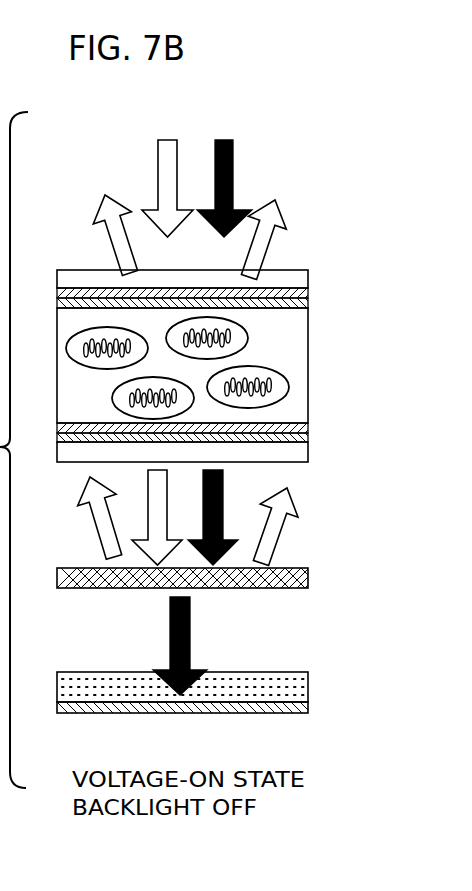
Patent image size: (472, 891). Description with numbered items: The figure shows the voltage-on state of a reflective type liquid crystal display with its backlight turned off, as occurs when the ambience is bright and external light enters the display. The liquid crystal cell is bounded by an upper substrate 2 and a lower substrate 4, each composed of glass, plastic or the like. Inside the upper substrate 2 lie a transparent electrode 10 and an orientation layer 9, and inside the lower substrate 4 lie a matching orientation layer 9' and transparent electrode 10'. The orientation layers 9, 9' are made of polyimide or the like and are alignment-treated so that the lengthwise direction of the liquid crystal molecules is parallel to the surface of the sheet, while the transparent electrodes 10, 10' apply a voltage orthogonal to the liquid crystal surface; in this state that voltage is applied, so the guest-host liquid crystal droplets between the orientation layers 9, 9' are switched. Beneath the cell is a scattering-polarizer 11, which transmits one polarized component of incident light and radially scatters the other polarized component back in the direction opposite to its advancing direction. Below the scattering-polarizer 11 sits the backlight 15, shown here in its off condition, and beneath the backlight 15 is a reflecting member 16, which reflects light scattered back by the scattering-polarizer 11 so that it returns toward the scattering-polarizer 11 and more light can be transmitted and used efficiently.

The substrate 2 is at (308, 275).
The transparent electrode 10 is at (217, 292).
The orientation layer 9 is at (200, 307).
The orientation layer 9' is at (203, 423).
The transparent electrode 10' is at (220, 443).
The substrate 4 is at (308, 455).
The scattering-polarizer 11 is at (308, 578).
The backlight 15 is at (308, 685).
The reflecting member 16 is at (308, 708).